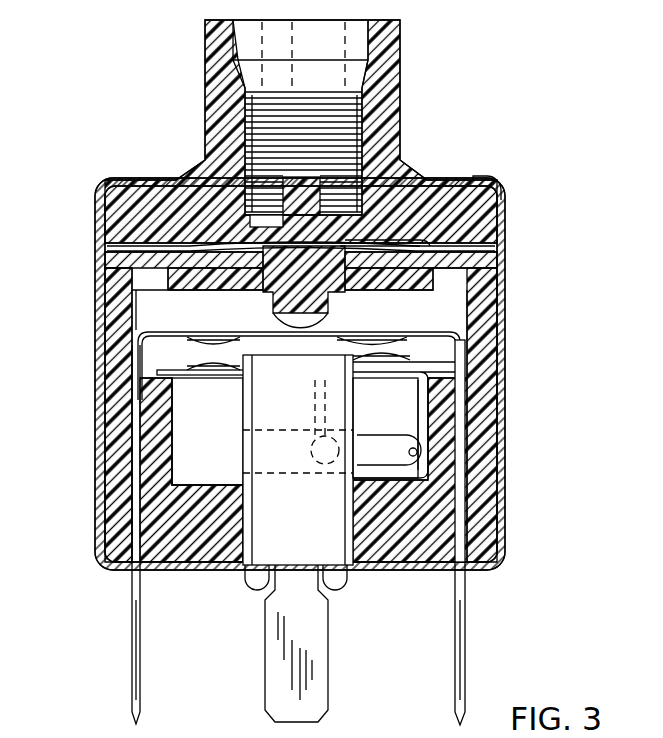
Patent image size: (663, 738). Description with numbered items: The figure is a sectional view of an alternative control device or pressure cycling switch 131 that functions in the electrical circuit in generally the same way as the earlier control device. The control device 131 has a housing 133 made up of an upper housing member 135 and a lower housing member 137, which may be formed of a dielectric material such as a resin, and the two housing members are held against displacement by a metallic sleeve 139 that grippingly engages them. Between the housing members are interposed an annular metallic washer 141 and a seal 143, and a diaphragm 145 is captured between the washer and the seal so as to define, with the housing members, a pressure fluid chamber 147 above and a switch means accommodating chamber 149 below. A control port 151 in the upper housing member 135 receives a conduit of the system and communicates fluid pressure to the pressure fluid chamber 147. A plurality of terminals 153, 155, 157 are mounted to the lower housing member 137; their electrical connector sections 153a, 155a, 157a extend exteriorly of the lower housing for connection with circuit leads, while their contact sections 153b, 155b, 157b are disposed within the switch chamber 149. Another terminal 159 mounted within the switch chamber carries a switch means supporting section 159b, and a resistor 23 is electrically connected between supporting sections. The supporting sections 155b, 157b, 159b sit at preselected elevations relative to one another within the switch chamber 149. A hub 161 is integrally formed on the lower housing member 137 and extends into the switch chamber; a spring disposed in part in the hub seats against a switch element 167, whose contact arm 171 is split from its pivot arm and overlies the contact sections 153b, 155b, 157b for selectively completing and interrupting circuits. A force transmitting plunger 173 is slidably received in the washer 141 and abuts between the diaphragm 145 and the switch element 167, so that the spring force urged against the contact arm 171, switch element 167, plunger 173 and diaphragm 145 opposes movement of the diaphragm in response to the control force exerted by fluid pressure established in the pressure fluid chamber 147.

The control device 131 is at (516, 74).
The housing 133 is at (73, 199).
The upper housing member 135 is at (205, 102).
The lower housing member 137 is at (487, 513).
The metallic sleeve 139 is at (470, 452).
The annular metallic washer 141 is at (482, 262).
The seal 143 is at (492, 245).
The diaphragm 145 is at (405, 244).
The pressure fluid chamber 147 is at (362, 240).
The switch means accommodating chamber 149 is at (497, 295).
The control port 151 is at (205, 60).
The terminal 153 is at (132, 648).
The electrical connector section 153a is at (132, 606).
The contact section 153b is at (137, 378).
The terminal 155 is at (465, 660).
The electrical connector section 155a is at (465, 620).
The contact section 155b is at (468, 372).
The terminal 157 is at (328, 658).
The electrical connector section 157a is at (328, 620).
The contact section 157b is at (219, 373).
The terminal 159 is at (268, 533).
The switch means supporting section 159b is at (470, 336).
The hub 161 is at (240, 446).
The switch element 167 is at (130, 332).
The contact arm 171 is at (165, 300).
The force transmitting plunger 173 is at (317, 276).
The resistor 23 is at (398, 433).